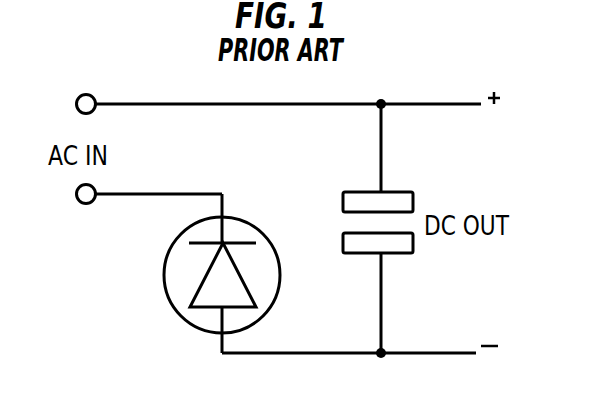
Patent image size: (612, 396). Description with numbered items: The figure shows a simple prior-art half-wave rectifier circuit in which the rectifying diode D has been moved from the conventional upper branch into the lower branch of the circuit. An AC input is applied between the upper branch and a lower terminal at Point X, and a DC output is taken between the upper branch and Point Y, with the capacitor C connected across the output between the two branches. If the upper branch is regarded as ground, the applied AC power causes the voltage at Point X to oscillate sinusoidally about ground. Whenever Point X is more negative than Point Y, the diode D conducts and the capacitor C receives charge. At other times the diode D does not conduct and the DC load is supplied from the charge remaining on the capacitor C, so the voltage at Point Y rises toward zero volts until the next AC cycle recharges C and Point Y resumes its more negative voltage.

The rectifying diode D is at (209, 285).
The capacitor C is at (378, 228).
The Point X is at (150, 214).
The Point Y is at (360, 339).